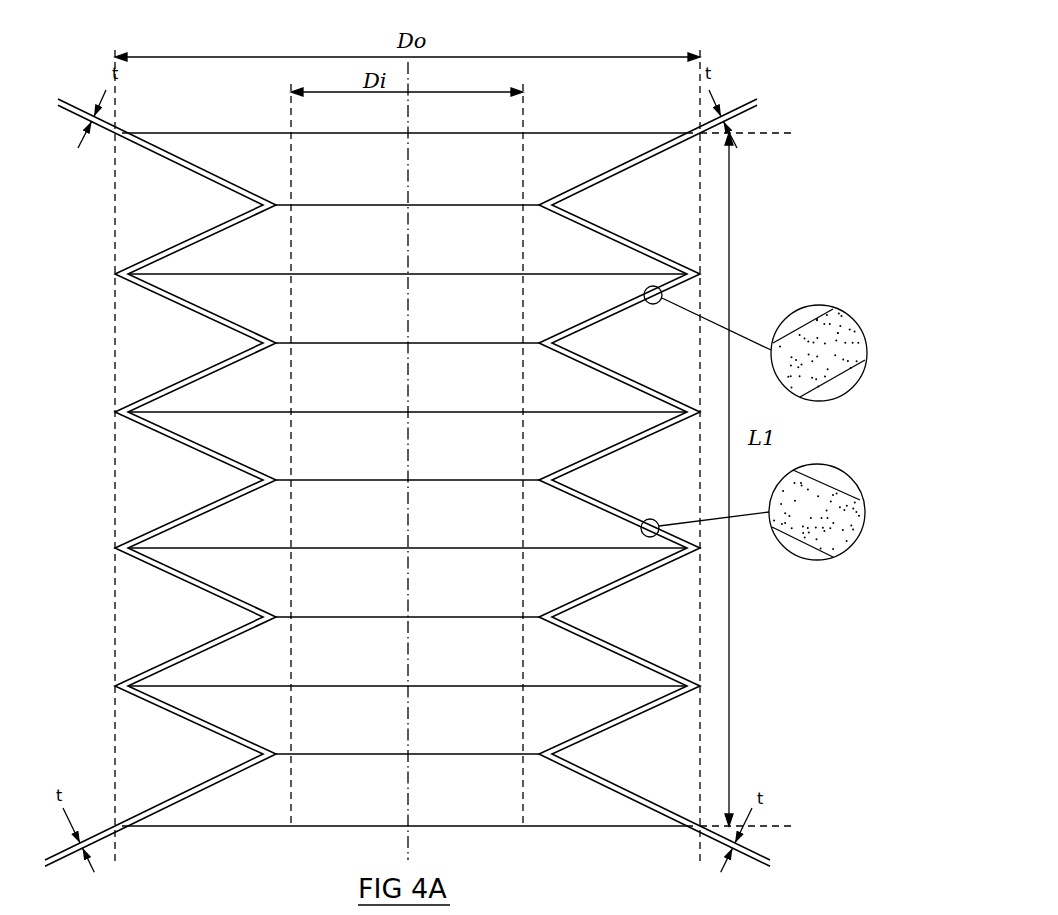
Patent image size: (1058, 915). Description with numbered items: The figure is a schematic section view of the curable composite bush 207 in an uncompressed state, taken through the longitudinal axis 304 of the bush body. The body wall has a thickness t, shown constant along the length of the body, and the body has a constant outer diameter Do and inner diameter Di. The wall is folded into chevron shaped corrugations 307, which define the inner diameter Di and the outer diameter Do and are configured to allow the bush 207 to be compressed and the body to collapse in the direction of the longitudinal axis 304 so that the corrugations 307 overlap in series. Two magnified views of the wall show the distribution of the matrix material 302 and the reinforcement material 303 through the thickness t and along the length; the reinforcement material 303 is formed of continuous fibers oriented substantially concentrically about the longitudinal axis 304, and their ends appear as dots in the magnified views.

The bush 207 is at (82, 233).
The chevron shaped corrugations 307 is at (115, 412).
The reinforcement material 303 is at (833, 310).
The matrix material 302 is at (862, 330).
The longitudinal axis 304 is at (408, 840).